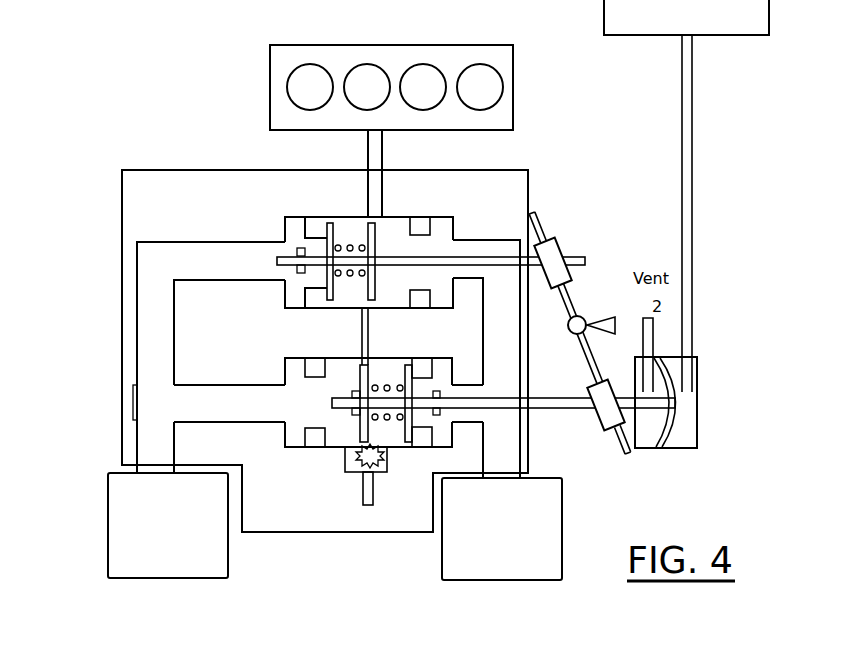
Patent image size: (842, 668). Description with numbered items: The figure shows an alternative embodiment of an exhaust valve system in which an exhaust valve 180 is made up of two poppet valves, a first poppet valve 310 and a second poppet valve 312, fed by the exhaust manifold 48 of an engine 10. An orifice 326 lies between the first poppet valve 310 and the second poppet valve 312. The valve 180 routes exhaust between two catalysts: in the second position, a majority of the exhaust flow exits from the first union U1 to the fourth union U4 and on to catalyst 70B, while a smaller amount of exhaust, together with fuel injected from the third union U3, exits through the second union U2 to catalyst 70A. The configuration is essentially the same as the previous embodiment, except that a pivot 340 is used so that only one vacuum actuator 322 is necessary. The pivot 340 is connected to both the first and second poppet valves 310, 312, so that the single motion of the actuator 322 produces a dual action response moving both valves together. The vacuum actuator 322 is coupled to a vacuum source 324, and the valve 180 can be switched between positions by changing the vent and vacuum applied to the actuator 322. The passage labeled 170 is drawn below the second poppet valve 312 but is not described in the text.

The engine 10 is at (513, 90).
The exhaust valve 180 is at (134, 170).
The exhaust manifold 48 is at (366, 147).
The first poppet valve 310 is at (408, 214).
The second poppet valve 312 is at (423, 368).
The orifice 326 is at (372, 324).
The union 1 U1 is at (388, 216).
The union two U2 is at (163, 393).
The union 3 U3 is at (387, 457).
The union 4 U4 is at (505, 418).
The outlet / vent passage 170 is at (382, 478).
The pivot 340 is at (575, 293).
The vacuum actuator 322 is at (698, 412).
The vacuum source 324 is at (724, 37).
The catalyst 70A is at (108, 524).
The catalyst 70B is at (442, 563).